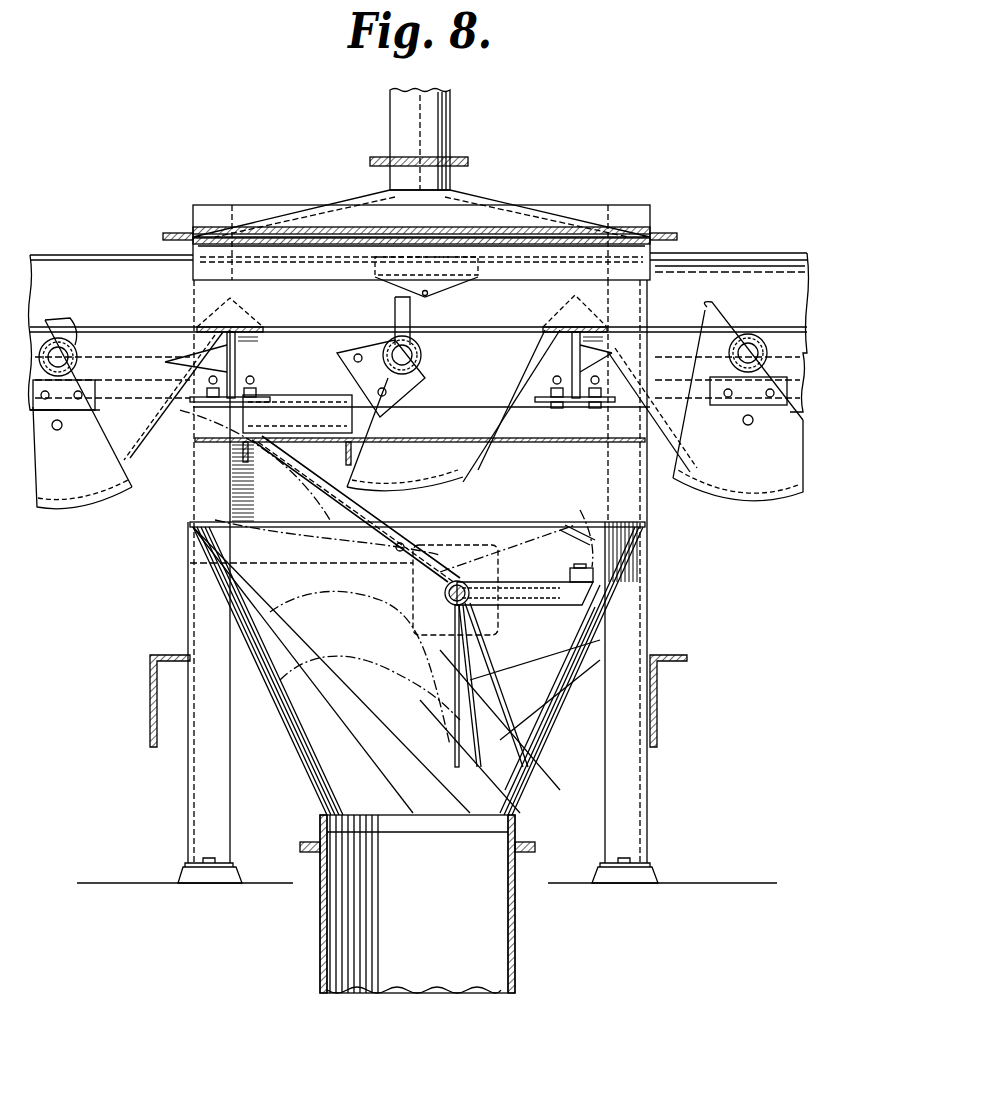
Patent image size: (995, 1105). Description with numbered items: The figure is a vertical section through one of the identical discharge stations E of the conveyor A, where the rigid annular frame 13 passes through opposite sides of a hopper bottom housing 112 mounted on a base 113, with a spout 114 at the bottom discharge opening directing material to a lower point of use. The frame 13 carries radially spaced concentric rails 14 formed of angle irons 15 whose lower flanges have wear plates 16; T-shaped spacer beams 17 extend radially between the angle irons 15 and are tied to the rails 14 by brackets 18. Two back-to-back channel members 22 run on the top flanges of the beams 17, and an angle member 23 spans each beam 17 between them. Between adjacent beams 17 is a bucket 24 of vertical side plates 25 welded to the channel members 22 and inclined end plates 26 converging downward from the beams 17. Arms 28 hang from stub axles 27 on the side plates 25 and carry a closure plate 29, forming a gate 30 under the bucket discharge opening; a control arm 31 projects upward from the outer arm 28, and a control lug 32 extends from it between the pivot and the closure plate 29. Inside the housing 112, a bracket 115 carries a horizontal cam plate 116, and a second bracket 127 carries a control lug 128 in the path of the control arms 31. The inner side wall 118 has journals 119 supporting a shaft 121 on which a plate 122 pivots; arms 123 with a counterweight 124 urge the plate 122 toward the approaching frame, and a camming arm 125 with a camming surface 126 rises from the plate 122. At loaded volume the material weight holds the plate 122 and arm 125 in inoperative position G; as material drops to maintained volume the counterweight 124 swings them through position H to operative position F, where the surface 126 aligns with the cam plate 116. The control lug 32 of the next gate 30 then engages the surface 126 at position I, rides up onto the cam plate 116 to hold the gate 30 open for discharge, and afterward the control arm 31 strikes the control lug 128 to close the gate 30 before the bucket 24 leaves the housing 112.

The hopper bottom housing 112 is at (502, 210).
The discharge station E is at (594, 205).
The control lug 128 is at (426, 277).
The second bracket 127 is at (438, 298).
The conveyor A is at (119, 249).
The rigid annular frame 13 is at (745, 254).
The channel members 22 is at (695, 262).
The engagement position I is at (427, 581).
The angle member 23 is at (240, 306).
The spacer beams 17 is at (262, 333).
The rails 14 is at (532, 420).
The wear plates 16 is at (574, 410).
The brackets 18 is at (393, 355).
The angle irons 15 is at (522, 374).
The control arm 31 is at (60, 330).
The stub axles 27 is at (66, 362).
The control lug 32 is at (60, 430).
The arms 28 is at (100, 437).
The closure plate 29 is at (82, 512).
The gate 30 is at (118, 500).
The end plates 26 is at (680, 485).
The bucket 24 is at (139, 466).
The side plates 25 is at (130, 345).
The cam plate 116 is at (385, 418).
The bracket 115 is at (258, 480).
The camming surface 126 is at (222, 448).
The operative position F is at (300, 500).
The inoperative position G is at (270, 555).
The inoperative position H is at (308, 548).
The spout 114 is at (515, 912).
The base 113 is at (657, 724).
The camming arm 125 is at (335, 570).
The journals 119 is at (485, 623).
The counterweight 124 is at (586, 531).
The arms 123 is at (558, 624).
The shaft 121 is at (435, 625).
The plate 122 is at (502, 700).
The inner side wall 118 is at (540, 671).